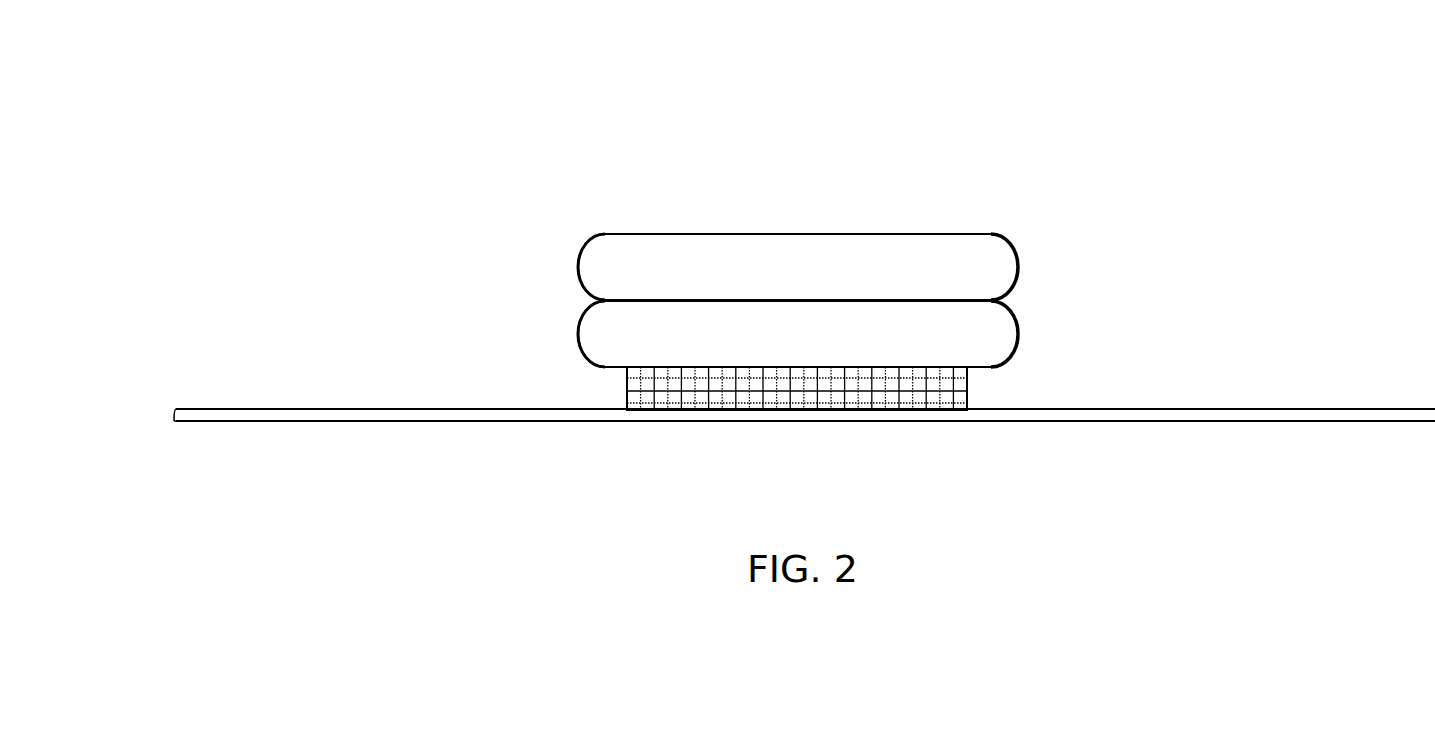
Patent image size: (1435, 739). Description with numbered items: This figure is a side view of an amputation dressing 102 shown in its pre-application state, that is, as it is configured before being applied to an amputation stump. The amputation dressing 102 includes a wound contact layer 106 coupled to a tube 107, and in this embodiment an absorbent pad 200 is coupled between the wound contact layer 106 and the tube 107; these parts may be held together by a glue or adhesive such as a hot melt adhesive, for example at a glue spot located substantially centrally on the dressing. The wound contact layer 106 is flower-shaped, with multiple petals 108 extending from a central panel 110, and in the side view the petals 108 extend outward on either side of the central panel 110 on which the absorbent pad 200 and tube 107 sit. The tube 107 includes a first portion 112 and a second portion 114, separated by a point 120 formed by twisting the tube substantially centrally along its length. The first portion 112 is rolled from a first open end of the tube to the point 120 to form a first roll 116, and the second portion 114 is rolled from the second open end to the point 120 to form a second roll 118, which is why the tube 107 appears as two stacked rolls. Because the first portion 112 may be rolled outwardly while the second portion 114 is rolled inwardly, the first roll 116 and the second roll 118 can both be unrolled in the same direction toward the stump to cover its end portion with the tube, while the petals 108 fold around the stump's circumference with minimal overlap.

The amputation dressing 102 is at (368, 112).
The wound contact layer 106 is at (150, 419).
The tube 107 is at (432, 292).
The petals 108 is at (310, 408).
The central panel 110 is at (798, 440).
The first portion 112 is at (500, 333).
The second portion 114 is at (500, 253).
The first roll 116 is at (1007, 325).
The second roll 118 is at (1007, 260).
The point 120 is at (786, 298).
The absorbent pad 200 is at (942, 395).